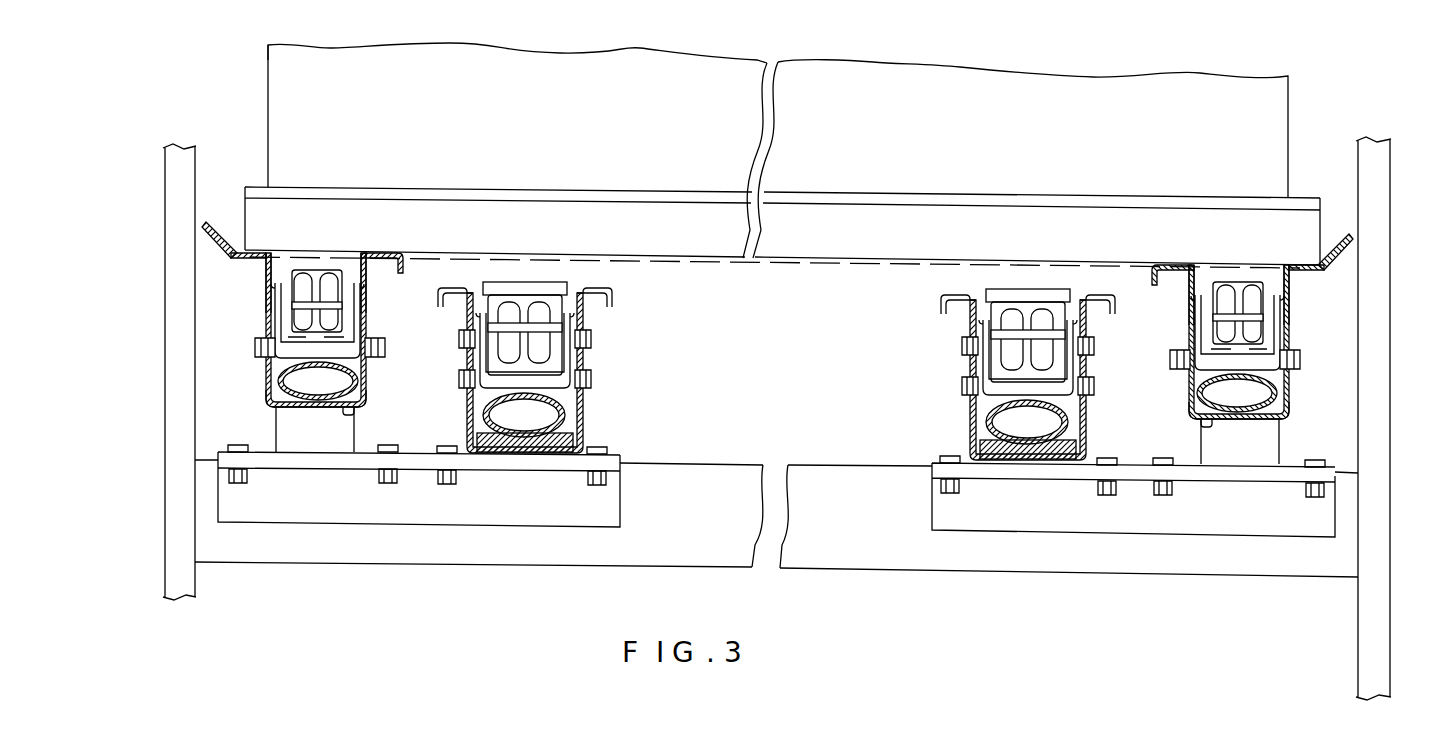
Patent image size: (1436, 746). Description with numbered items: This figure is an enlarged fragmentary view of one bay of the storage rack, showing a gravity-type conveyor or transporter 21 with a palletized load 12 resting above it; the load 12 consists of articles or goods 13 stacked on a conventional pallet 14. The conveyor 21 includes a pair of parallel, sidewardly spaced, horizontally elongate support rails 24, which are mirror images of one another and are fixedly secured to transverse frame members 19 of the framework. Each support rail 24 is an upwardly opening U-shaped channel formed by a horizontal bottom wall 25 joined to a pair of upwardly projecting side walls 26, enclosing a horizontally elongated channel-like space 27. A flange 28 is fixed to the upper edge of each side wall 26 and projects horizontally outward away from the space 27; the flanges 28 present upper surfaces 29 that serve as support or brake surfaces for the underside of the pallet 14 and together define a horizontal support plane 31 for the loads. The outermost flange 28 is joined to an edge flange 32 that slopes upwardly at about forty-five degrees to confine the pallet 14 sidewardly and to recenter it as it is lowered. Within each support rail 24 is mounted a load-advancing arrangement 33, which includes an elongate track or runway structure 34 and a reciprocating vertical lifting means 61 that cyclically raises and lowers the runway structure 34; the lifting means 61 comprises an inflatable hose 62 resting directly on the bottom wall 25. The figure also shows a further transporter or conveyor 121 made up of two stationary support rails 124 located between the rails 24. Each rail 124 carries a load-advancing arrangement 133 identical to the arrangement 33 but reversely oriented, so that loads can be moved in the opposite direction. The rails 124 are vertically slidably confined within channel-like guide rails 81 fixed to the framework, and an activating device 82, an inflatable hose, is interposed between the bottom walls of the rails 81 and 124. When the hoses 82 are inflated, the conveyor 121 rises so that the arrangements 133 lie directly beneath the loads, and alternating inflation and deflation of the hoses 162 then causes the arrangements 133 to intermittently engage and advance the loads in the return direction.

The palletized load 12 is at (268, 53).
The articles or goods 13 is at (282, 95).
The pallet 14 is at (390, 222).
The transverse frame member 19 is at (978, 577).
The conveyor or transporter 21 is at (302, 448).
The support rail 24 is at (266, 325).
The bottom wall 25 is at (352, 409).
The side wall 26 is at (270, 284).
The channel-like space 27 is at (268, 398).
The flange 28 is at (258, 264).
The upper surface 29 is at (238, 256).
The horizontal support plane 31 is at (1005, 258).
The edge flange 32 is at (203, 232).
The load-advancing arrangement 33 is at (314, 268).
The track or runway structure 34 is at (366, 322).
The vertical lifting means 61 is at (323, 407).
The inflatable hose 62 is at (285, 370).
The guide rail 81 is at (590, 440).
The activating device 82 is at (537, 452).
The further transporter or conveyor 121 is at (490, 476).
The support rail 124 is at (605, 302).
The load-advancing arrangement 133 is at (534, 283).
The hose 162 is at (585, 405).